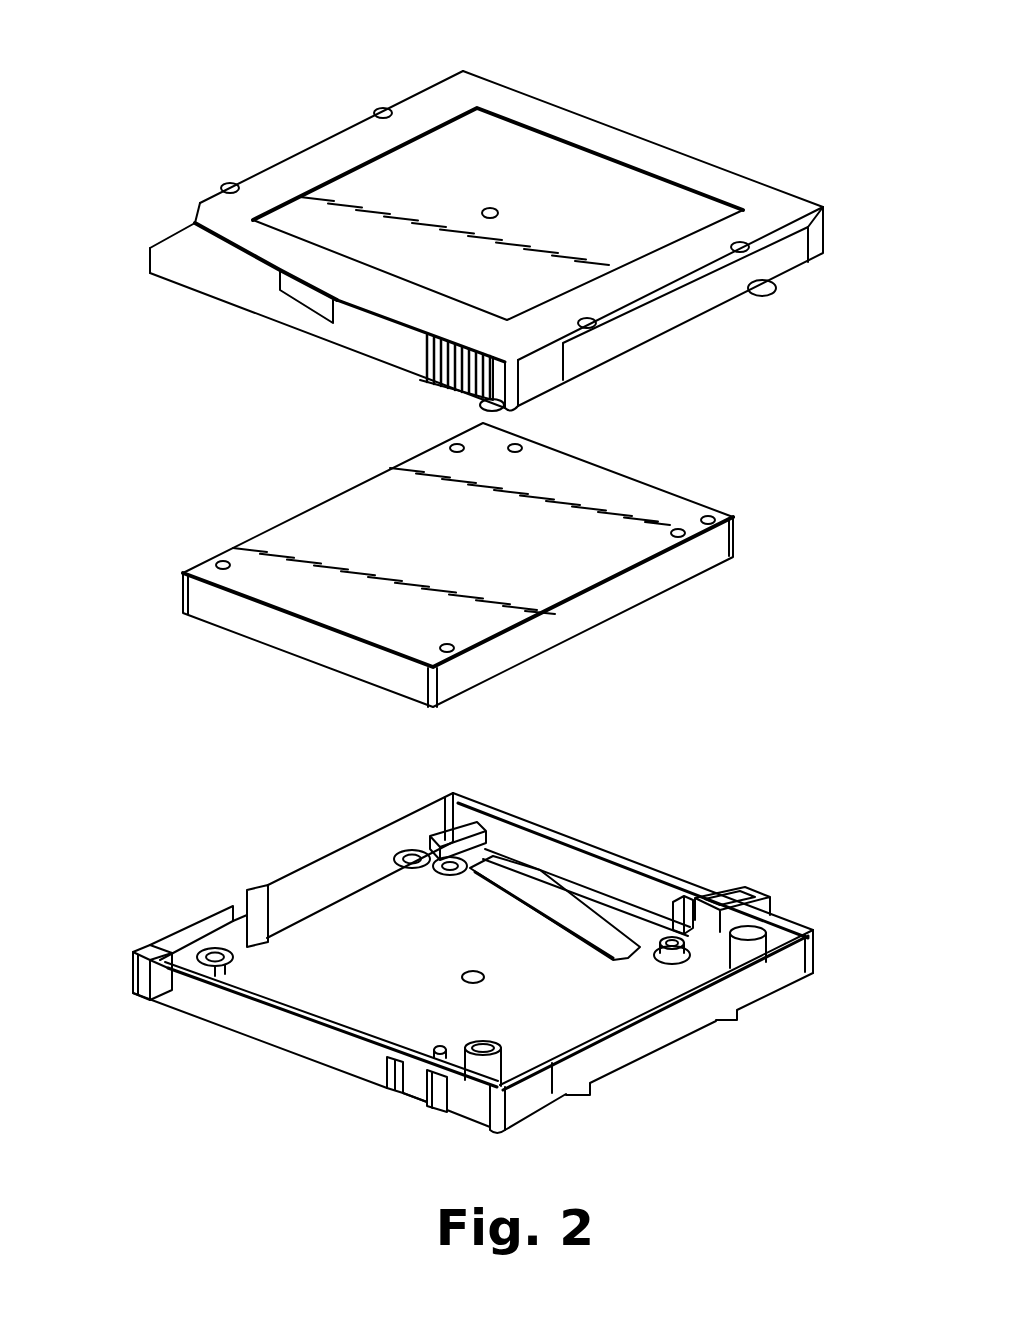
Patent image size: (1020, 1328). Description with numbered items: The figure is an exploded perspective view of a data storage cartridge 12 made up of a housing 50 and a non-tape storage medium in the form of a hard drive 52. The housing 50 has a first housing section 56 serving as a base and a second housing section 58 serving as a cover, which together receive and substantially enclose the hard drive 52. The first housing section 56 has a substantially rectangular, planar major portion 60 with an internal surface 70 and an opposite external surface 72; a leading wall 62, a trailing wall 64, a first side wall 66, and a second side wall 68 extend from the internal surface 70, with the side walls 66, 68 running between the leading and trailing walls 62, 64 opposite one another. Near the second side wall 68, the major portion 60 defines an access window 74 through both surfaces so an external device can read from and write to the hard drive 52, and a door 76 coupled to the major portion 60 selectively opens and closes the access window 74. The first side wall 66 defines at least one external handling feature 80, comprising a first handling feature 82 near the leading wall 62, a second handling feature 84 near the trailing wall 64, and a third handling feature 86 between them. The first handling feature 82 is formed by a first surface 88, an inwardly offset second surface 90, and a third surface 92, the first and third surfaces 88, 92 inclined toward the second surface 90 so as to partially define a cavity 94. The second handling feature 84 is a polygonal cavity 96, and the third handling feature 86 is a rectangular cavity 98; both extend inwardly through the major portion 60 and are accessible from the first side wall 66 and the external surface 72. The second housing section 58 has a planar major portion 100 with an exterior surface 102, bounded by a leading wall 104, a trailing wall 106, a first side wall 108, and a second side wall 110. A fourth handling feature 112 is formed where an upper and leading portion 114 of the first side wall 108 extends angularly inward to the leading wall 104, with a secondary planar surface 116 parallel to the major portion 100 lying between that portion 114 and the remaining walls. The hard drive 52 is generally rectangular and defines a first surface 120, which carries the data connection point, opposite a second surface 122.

The data storage cartridge 12 is at (742, 48).
The housing 50 is at (800, 890).
The hard drive 52 is at (736, 542).
The first housing section 56 is at (650, 905).
The second housing section 58 is at (630, 140).
The major portion 60 is at (600, 1013).
The leading wall 62 is at (300, 884).
The trailing wall 64 is at (698, 1013).
The first side wall 66 is at (290, 1033).
The second side wall 68 is at (513, 828).
The internal surface 70 is at (350, 916).
The external surface 72 is at (537, 1113).
The access window 74 is at (603, 898).
The door 76 is at (525, 882).
The external handling feature 80 is at (410, 1122).
The first handling feature 82 is at (155, 1003).
The second handling feature 84 is at (421, 1102).
The third handling feature 86 is at (385, 1078).
The first surface 88 is at (142, 977).
The second surface 90 is at (163, 962).
The third surface 92 is at (170, 970).
The cavity 94 is at (142, 993).
The cavity 96 is at (440, 1097).
The cavity 98 is at (398, 1085).
The major portion 100 is at (778, 210).
The exterior surface 102 is at (740, 192).
The leading wall 104 is at (278, 160).
The trailing wall 106 is at (698, 306).
The first side wall 108 is at (373, 340).
The second side wall 110 is at (545, 96).
The fourth handling feature 112 is at (218, 240).
The upper and leading portion 114 is at (262, 264).
The secondary planar surface 116 is at (193, 252).
The first surface 120 is at (633, 605).
The second surface 122 is at (620, 487).